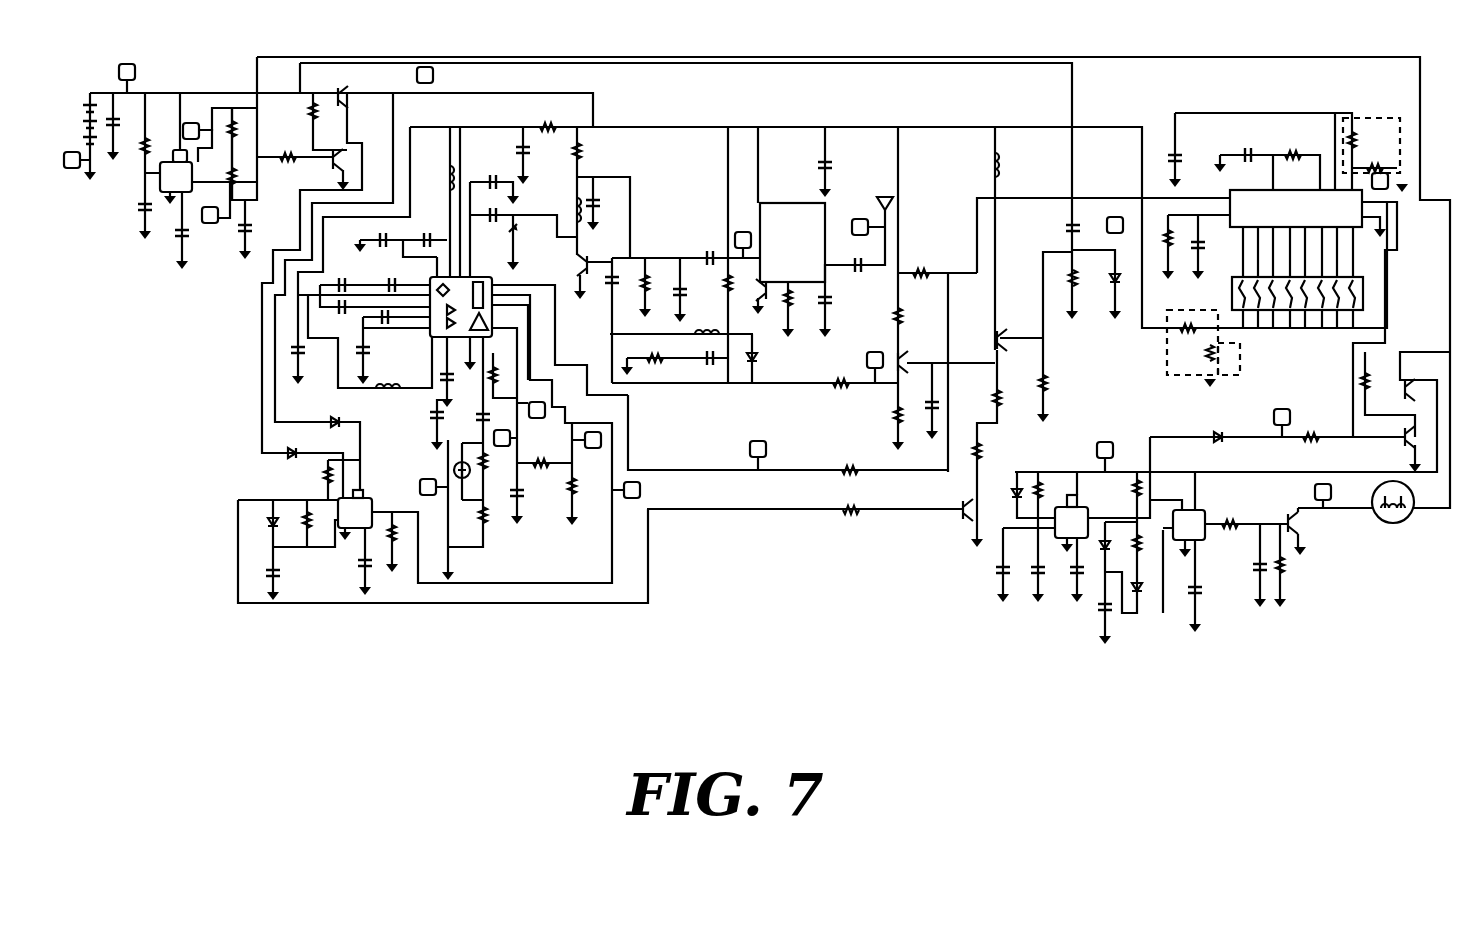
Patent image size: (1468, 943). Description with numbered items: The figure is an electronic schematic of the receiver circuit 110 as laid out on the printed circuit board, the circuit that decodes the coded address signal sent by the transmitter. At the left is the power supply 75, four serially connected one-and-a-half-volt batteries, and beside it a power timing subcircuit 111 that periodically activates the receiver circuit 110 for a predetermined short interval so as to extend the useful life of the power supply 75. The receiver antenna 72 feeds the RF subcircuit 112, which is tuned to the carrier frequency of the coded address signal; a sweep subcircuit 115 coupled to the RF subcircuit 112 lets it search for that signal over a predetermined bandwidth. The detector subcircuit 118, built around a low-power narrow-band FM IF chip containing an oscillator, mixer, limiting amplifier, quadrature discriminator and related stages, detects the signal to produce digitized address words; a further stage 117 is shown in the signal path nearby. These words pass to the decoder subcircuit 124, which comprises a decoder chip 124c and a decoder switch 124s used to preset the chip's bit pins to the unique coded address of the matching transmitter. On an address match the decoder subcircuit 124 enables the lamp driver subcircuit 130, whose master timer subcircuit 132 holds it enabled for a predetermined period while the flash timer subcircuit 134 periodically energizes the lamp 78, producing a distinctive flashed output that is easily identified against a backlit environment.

The receiver circuit 110 is at (735, 655).
The power supply 75 is at (85, 88).
The power timing subcircuit 111 is at (175, 217).
The sweep subcircuit 115 is at (314, 594).
The detector subcircuit 118 is at (505, 275).
The oscillator circuit 117 is at (675, 238).
The RF subcircuit 112 is at (799, 194).
The receiver antenna 72 is at (899, 214).
The decoder subcircuit 124 is at (1285, 131).
The decoder chip 124c is at (1365, 235).
The decoder switch 124s is at (1370, 318).
The lamp 78 is at (1412, 528).
The master timer subcircuit 132 is at (1050, 609).
The lamp driver subcircuit 130 is at (1151, 673).
The flash timer subcircuit 134 is at (1242, 610).